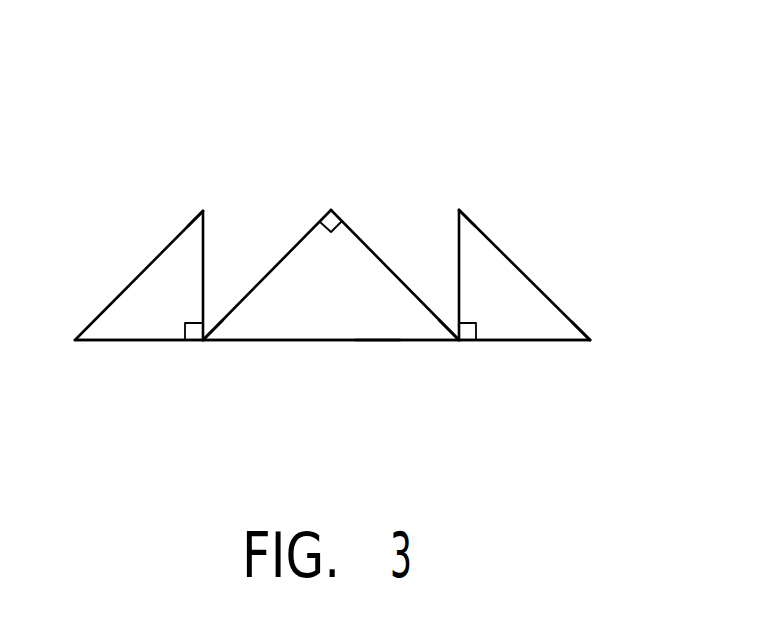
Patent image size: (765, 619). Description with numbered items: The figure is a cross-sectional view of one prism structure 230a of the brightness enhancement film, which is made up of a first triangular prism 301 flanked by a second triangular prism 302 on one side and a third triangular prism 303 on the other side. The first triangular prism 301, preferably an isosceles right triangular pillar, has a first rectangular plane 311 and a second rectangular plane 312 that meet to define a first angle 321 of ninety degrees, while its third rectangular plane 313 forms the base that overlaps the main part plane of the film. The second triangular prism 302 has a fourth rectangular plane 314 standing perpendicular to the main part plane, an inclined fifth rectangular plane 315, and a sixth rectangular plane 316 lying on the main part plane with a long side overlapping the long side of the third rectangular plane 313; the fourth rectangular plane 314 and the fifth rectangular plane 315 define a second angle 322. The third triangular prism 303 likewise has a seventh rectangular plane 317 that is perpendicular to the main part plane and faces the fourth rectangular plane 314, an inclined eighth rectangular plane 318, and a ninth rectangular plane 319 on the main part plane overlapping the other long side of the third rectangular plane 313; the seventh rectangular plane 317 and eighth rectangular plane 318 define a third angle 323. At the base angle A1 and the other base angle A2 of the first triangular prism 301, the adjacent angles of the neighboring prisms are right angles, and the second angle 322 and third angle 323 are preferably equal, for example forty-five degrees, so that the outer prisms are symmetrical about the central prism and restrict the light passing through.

The prism structure 230a is at (630, 78).
The first triangular prism 301 is at (310, 325).
The second triangular prism 302 is at (120, 325).
The third triangular prism 303 is at (505, 323).
The first rectangular plane 311 is at (290, 250).
The second rectangular plane 312 is at (373, 250).
The third rectangular plane 313 is at (375, 327).
The fourth rectangular plane 314 is at (205, 232).
The fifth rectangular plane 315 is at (140, 270).
The sixth rectangular plane 316 is at (178, 323).
The seventh rectangular plane 317 is at (458, 240).
The eighth rectangular plane 318 is at (525, 268).
The ninth rectangular plane 319 is at (572, 335).
The first angle 321 is at (322, 252).
The second angle 322 is at (197, 222).
The third angle 323 is at (467, 220).
The base angle A1 is at (223, 327).
The base angle A2 is at (440, 323).